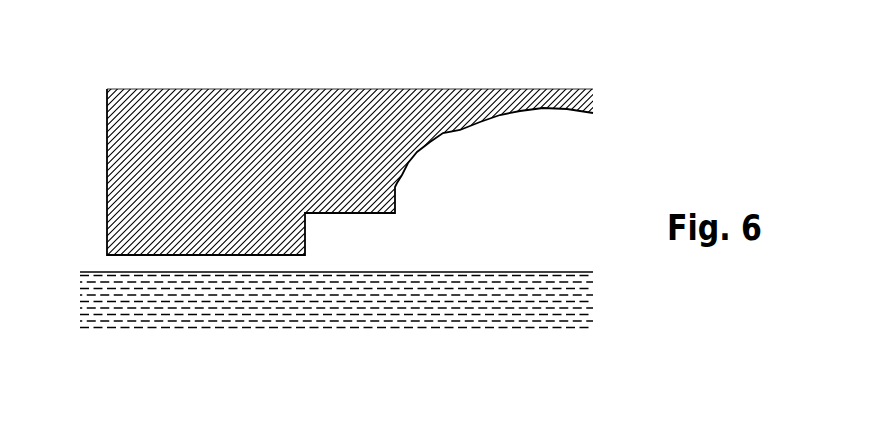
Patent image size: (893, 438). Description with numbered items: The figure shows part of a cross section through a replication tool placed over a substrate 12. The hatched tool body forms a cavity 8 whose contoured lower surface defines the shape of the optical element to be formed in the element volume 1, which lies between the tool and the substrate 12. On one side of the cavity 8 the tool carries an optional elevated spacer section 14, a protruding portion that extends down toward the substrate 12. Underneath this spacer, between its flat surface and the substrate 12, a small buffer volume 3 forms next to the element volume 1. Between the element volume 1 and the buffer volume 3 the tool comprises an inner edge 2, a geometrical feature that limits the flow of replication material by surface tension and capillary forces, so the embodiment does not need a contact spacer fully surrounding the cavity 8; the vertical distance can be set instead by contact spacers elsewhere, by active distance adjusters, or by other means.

The element volume 1 is at (500, 253).
The inner edge 2 is at (390, 205).
The buffer volume 3 is at (348, 225).
The cavity 8 is at (445, 106).
The substrate 12 is at (565, 308).
The elevated spacer section 14 is at (232, 246).